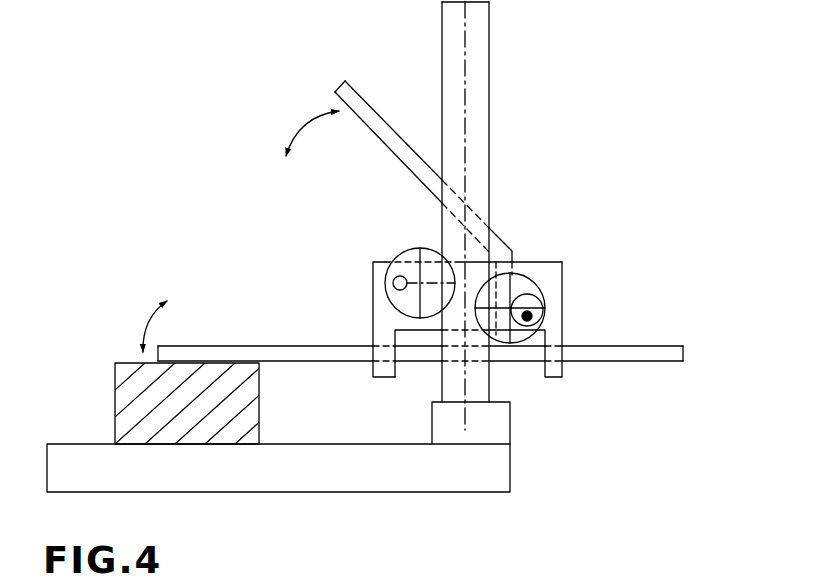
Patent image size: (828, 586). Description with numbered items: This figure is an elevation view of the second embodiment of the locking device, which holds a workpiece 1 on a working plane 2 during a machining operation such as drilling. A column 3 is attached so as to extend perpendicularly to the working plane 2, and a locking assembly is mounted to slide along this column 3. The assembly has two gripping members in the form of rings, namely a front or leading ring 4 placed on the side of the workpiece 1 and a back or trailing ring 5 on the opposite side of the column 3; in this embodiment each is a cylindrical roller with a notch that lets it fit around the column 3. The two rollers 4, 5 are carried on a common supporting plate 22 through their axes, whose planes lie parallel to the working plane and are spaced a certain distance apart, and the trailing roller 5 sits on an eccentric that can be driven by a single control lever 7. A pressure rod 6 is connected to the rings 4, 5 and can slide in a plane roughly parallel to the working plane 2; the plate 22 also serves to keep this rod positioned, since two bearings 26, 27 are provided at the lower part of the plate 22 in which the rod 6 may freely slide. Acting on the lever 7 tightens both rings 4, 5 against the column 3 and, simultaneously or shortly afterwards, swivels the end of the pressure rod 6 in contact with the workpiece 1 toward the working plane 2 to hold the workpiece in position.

The workpiece 1 is at (110, 391).
The working plane 2 is at (68, 441).
The column 3 is at (492, 75).
The front or leading ring 4 is at (404, 249).
The back or trailing ring 5 is at (532, 278).
The pressure rod 6 is at (271, 343).
The control lever 7 is at (385, 111).
The supporting plate 22 is at (522, 257).
The bearing 26 is at (370, 370).
The bearing 27 is at (566, 370).